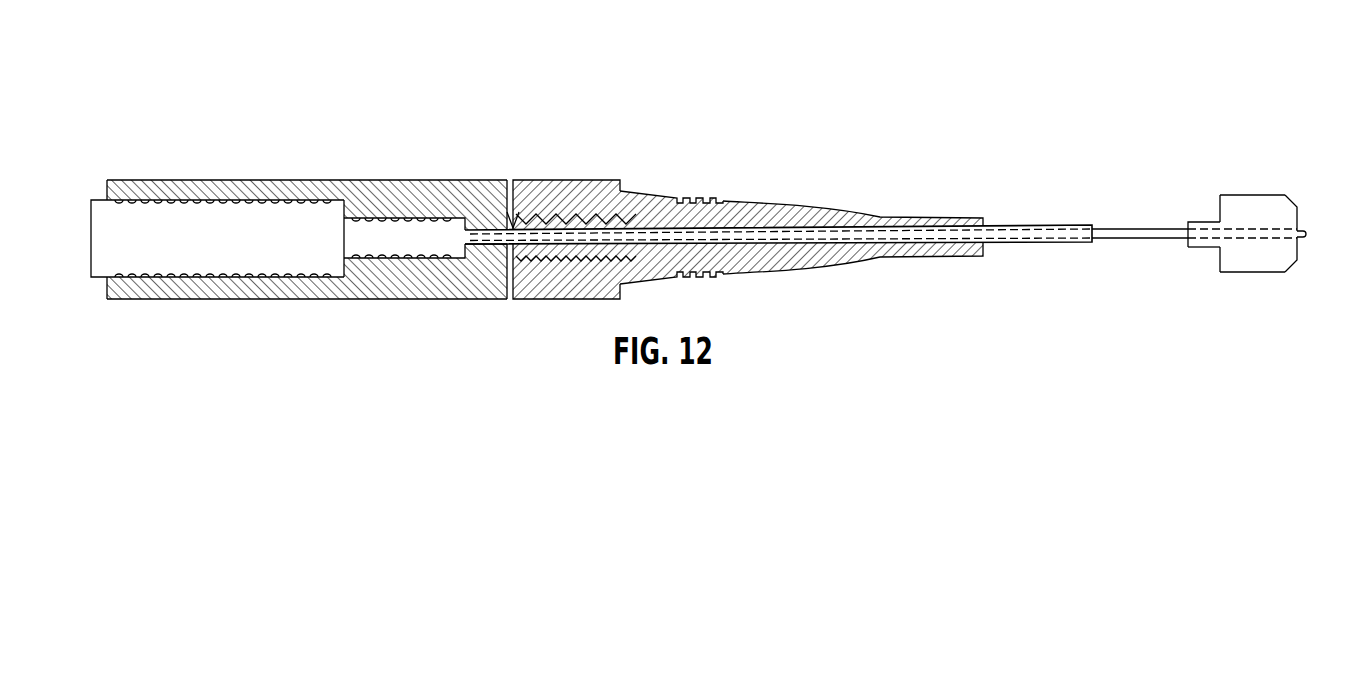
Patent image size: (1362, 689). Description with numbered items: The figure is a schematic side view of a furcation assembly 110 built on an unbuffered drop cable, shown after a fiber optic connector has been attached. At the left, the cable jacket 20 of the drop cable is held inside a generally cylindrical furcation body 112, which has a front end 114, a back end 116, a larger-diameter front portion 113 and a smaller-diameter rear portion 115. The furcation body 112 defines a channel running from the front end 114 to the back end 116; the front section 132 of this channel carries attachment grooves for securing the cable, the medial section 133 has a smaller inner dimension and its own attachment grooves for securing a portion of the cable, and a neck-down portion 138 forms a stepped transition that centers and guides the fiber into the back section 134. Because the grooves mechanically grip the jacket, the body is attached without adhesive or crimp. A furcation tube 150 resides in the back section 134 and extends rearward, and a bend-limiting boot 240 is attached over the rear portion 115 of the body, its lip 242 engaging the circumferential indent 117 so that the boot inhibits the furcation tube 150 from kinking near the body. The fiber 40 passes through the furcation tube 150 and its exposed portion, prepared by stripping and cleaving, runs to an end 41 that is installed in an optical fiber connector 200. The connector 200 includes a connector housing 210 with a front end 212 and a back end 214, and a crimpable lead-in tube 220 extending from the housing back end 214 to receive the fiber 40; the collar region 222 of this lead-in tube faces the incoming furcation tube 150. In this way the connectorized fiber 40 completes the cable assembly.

The catheter adapter assembly 110 is at (200, 126).
The front portion 113 is at (283, 179).
The front end 114 is at (107, 188).
The front section 132 is at (307, 282).
The furcation body 112 is at (345, 295).
The cable jacket 20 is at (125, 230).
The back section 134 is at (437, 217).
The medial section 133 is at (163, 280).
The back end 116 is at (637, 214).
The circumferential indent 117 is at (520, 276).
The rear portion 115 is at (578, 272).
The lip 242 is at (505, 205).
The bend-limiting boot 240 is at (775, 201).
The neck-down portion 138 is at (481, 262).
The furcation tube 150 is at (1020, 246).
The fiber 40 is at (1147, 231).
The optical fiber connector 200 is at (1278, 195).
The back end 214 is at (1220, 197).
The front end 212 is at (1300, 205).
The connector housing 210 is at (1260, 262).
The crimpable lead-in tube 220 is at (1195, 222).
The collar bottom 222 is at (1187, 248).
The end 41 is at (1305, 235).